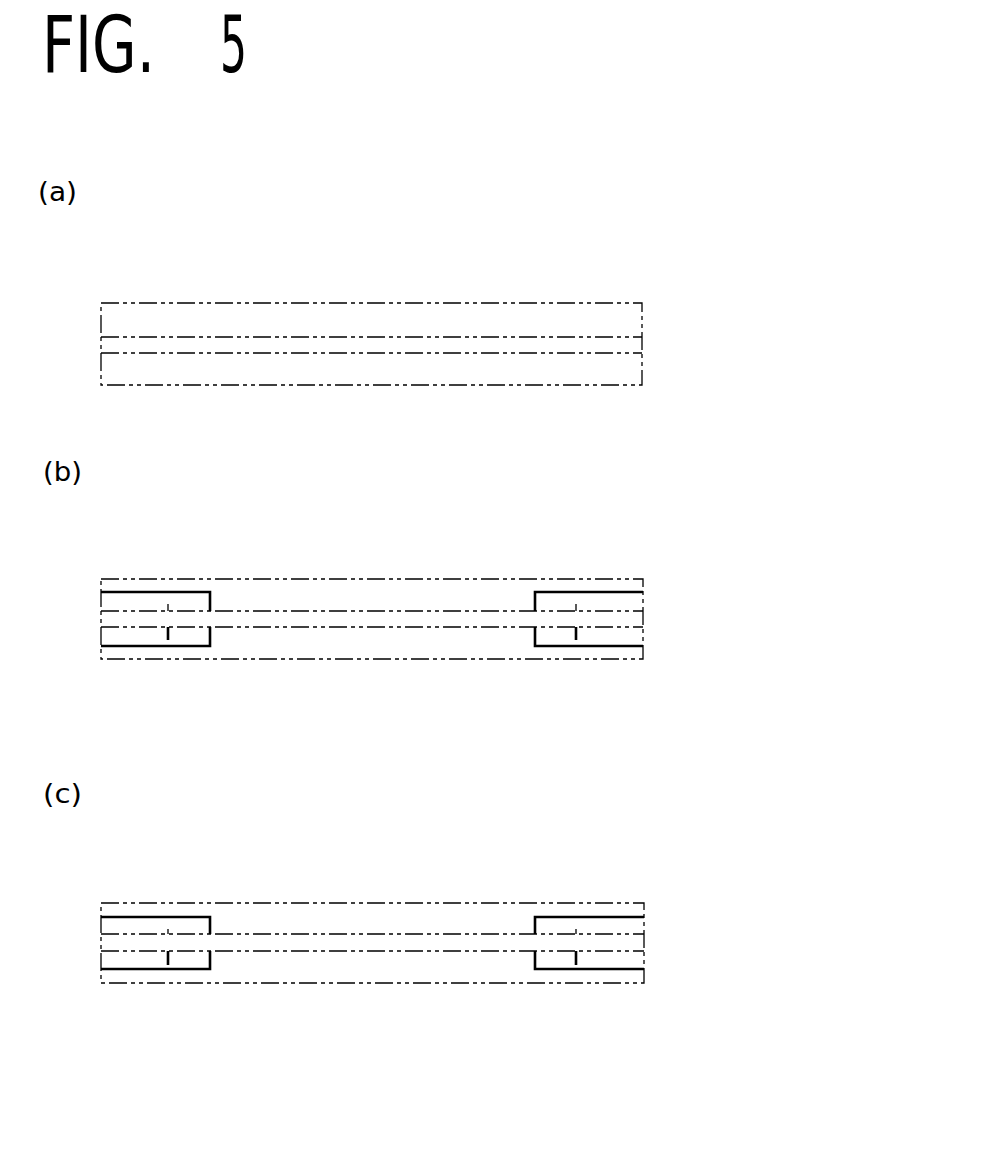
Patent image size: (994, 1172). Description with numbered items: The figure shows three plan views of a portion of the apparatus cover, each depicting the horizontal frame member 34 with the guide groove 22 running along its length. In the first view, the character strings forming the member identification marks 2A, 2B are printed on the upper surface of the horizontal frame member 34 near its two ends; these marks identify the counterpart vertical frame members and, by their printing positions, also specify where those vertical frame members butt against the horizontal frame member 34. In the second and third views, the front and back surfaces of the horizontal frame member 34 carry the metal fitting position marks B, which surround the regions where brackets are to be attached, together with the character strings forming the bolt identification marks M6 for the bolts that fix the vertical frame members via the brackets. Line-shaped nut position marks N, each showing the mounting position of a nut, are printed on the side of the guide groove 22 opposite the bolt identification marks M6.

The horizontal frame member 34 is at (495, 303).
The guide groove 22 is at (365, 627).
The member identification mark 2A is at (113, 305).
The member identification mark 2B is at (630, 303).
The bolt identification mark M6 is at (172, 592).
The nut position mark N is at (168, 633).
The metal fitting position mark B is at (187, 646).